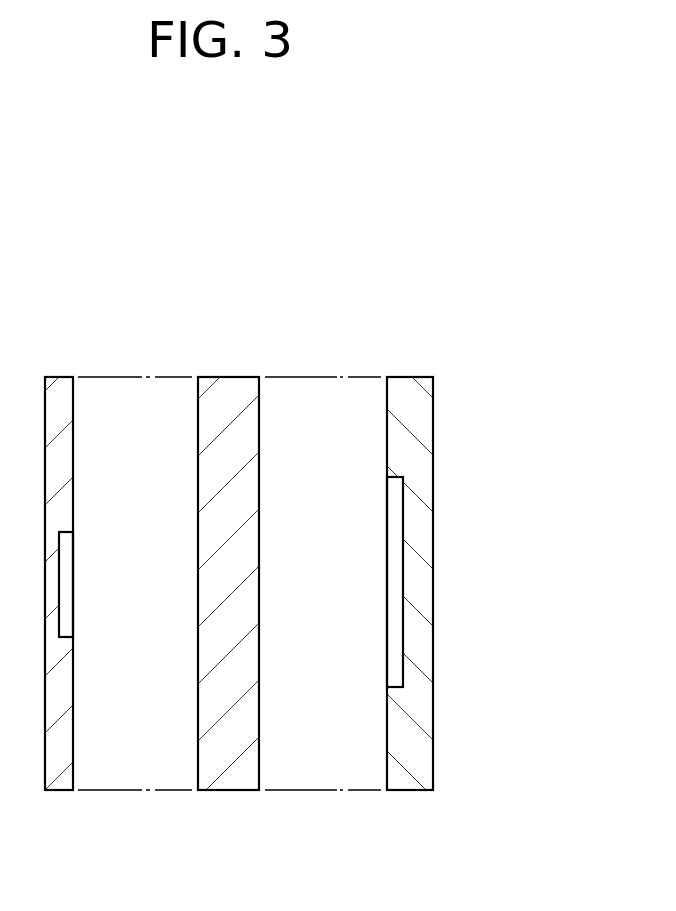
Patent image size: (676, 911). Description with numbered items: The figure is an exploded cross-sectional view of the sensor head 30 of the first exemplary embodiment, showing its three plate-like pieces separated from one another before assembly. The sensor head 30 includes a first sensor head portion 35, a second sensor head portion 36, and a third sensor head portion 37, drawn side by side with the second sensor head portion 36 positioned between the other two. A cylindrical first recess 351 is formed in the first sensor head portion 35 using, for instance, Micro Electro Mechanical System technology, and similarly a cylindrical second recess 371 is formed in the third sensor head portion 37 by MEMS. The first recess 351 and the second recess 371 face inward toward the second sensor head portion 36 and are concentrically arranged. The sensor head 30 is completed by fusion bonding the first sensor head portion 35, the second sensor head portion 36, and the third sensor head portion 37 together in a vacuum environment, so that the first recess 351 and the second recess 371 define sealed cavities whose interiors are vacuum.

The sensor head 30 is at (436, 264).
The first sensor head portion 35 is at (410, 377).
The first recess 351 is at (403, 584).
The second sensor head portion 36 is at (229, 377).
The third sensor head portion 37 is at (59, 377).
The second recess 371 is at (62, 613).